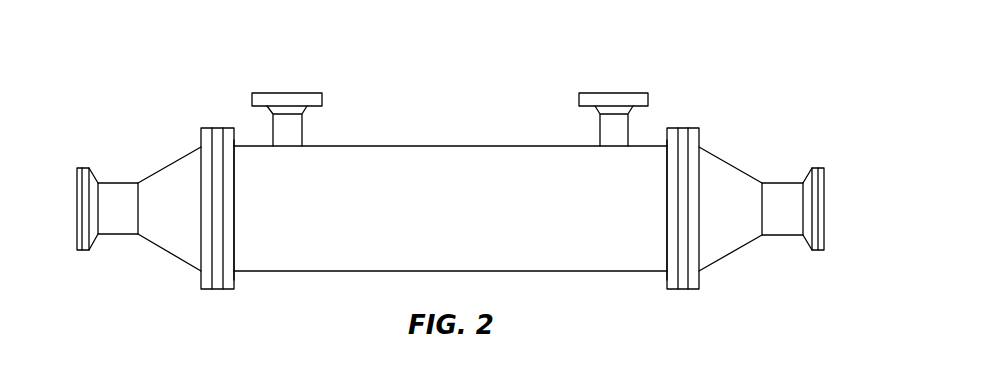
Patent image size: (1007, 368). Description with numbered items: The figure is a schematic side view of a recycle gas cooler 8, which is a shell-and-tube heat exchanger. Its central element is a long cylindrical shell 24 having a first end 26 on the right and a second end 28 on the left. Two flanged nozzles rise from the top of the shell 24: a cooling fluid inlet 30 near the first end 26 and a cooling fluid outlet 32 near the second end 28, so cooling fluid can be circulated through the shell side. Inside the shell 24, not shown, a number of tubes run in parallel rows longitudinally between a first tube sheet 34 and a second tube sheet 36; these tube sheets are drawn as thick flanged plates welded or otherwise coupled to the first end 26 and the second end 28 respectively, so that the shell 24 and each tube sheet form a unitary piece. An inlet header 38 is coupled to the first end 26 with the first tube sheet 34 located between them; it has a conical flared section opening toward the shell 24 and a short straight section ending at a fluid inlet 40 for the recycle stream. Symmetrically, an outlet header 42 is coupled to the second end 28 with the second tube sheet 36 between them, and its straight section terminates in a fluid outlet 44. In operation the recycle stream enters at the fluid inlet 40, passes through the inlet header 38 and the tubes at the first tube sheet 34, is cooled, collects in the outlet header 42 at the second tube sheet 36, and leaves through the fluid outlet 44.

The recycle gas cooler 8 is at (134, 45).
The shell 24 is at (433, 146).
The first end 26 is at (667, 135).
The second end 28 is at (234, 137).
The cooling fluid inlet 30 is at (600, 130).
The cooling fluid outlet 32 is at (303, 130).
The first tube sheet 34 is at (683, 128).
The second tube sheet 36 is at (217, 128).
The inlet header 38 is at (730, 165).
The fluid inlet 40 is at (824, 185).
The outlet header 42 is at (161, 170).
The fluid outlet 44 is at (76, 186).